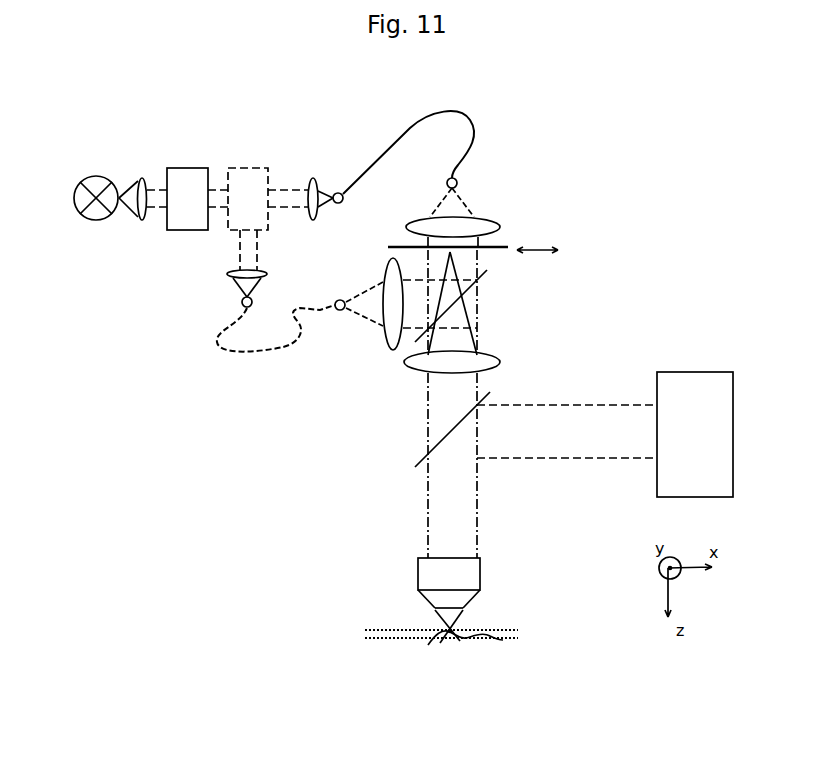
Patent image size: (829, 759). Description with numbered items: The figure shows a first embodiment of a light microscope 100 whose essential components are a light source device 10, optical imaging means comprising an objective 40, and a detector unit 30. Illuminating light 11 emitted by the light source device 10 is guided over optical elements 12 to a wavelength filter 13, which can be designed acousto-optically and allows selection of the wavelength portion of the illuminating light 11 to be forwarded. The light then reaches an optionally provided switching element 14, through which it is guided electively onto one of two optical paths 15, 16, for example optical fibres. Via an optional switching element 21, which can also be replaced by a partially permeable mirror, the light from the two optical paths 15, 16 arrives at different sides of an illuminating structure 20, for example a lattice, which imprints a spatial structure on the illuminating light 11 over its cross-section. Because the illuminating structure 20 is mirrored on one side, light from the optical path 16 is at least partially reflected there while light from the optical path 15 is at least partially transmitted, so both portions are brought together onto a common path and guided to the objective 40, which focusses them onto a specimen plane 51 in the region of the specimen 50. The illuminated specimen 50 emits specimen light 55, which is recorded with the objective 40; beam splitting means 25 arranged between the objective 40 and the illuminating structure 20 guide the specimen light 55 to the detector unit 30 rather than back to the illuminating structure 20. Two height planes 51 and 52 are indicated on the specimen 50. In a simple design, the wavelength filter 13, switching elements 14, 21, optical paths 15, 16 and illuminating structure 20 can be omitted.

The light source device 10 is at (93, 176).
The illuminating light 11 is at (127, 212).
The optical elements 12 is at (146, 175).
The wavelength filter 13 is at (199, 208).
The switching element 14 is at (259, 208).
The optical path 15 is at (410, 130).
The optical path 16 is at (227, 357).
The illuminating structure 20 is at (507, 245).
The switching element 21 is at (470, 288).
The beam splitting means 25 is at (423, 458).
The detector unit 30 is at (706, 439).
The objective 40 is at (463, 581).
The specimen 50 is at (428, 645).
The specimen plane 51 is at (515, 630).
The height plane 52 is at (508, 642).
The specimen light 55 is at (557, 440).
The light microscope 100 is at (603, 159).